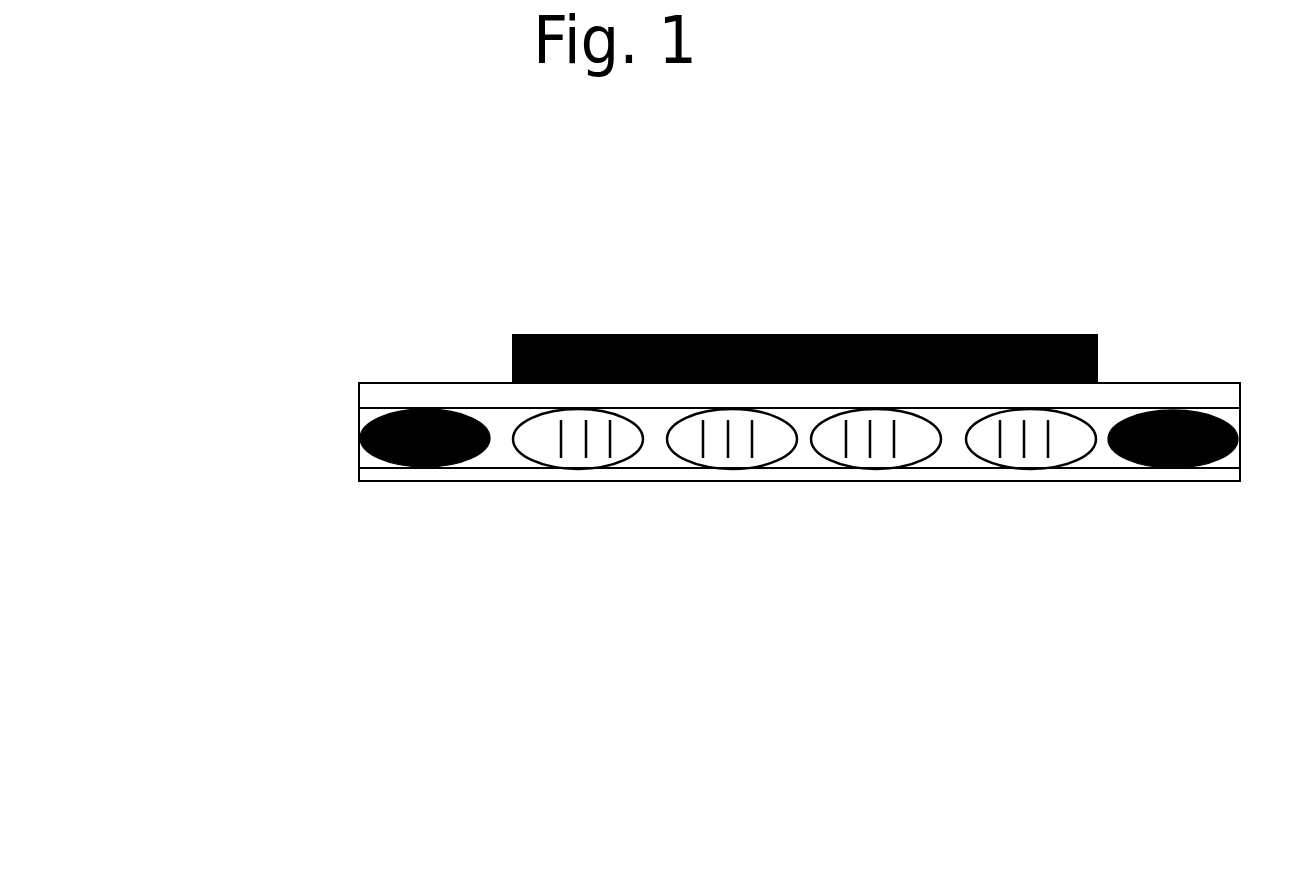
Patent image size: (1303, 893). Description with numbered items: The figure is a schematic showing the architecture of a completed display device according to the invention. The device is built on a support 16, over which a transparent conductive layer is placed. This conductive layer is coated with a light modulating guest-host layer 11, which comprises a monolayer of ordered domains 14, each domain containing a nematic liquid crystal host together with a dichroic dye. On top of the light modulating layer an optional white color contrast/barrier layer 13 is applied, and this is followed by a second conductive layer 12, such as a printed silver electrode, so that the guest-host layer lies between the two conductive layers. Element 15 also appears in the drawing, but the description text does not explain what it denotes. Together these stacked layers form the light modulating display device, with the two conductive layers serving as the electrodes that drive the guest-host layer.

The light modulating guest-host layer 11 is at (502, 428).
The second conductive layer 12 is at (940, 324).
The white color contrast/barrier layer 13 is at (1133, 395).
The ordered domains 14 is at (1130, 458).
The lower substrate 15 is at (488, 470).
The support 16 is at (804, 491).